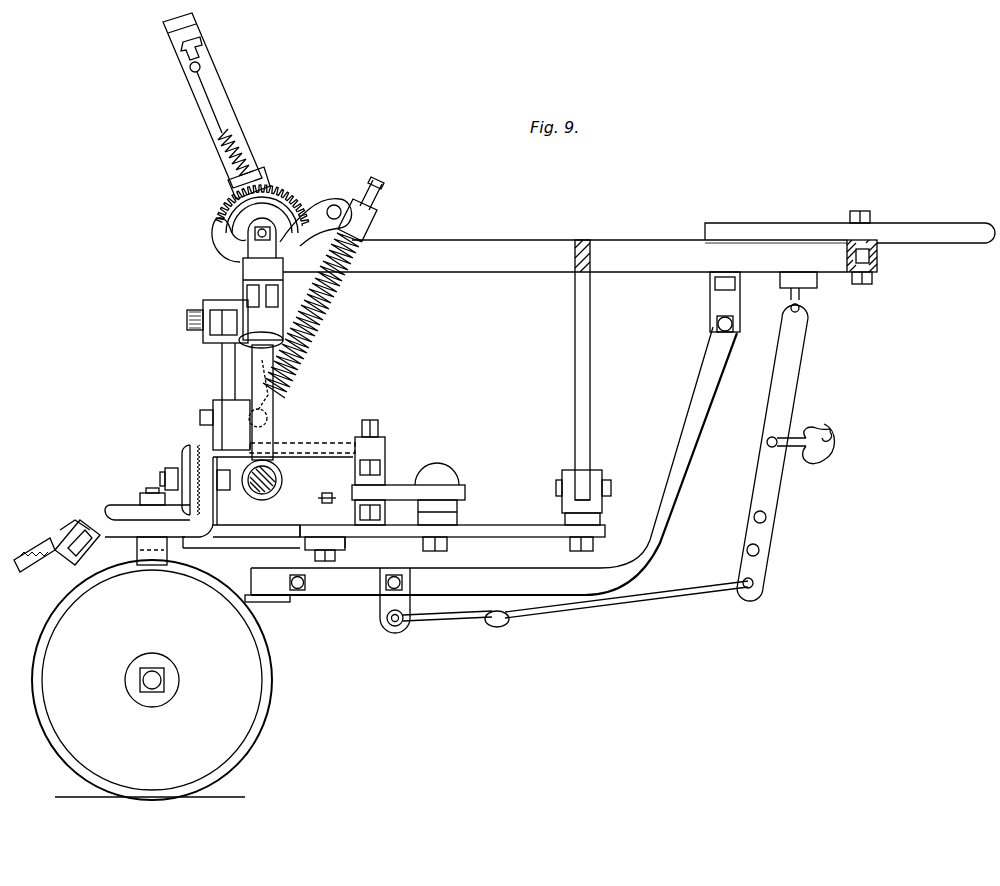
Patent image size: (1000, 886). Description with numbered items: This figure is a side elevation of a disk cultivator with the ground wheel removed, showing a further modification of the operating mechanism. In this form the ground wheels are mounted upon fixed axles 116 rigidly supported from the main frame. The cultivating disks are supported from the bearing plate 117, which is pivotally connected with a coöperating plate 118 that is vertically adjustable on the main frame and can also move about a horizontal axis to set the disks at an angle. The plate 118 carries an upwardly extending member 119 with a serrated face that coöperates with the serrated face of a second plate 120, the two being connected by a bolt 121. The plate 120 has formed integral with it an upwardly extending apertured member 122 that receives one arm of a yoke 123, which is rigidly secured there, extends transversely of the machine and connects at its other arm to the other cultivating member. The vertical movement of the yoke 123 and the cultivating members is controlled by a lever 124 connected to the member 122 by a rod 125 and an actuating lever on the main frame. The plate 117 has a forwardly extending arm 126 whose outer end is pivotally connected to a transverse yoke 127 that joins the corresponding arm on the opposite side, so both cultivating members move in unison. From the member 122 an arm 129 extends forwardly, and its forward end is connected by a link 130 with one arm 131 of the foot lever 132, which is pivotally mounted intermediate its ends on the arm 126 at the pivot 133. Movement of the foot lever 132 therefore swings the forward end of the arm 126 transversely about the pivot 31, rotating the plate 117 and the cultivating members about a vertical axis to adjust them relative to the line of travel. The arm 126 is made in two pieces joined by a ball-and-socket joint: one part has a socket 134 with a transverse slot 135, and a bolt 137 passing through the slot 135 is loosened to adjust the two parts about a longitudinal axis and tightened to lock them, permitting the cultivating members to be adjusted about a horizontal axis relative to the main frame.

The pivot 31 is at (145, 541).
The fixed axle 116 is at (284, 476).
The bearing plate 117 is at (115, 528).
The coöperating plate 118 is at (121, 518).
The upwardly extending member 119 is at (182, 453).
The second plate 120 is at (213, 510).
The bolt 121 is at (165, 475).
The apertured member 122 is at (213, 411).
The yoke 123 is at (222, 358).
The lever 124 is at (240, 137).
The rod 125 is at (380, 183).
The arm 126 is at (243, 543).
The yoke 127 is at (575, 326).
The arm 129 is at (322, 430).
The link 130 is at (385, 476).
The arm of foot lever 131 is at (400, 492).
The foot lever 132 is at (448, 470).
The pivot of foot lever 133 is at (456, 509).
The socket 134 is at (282, 525).
The transverse slot 135 is at (328, 505).
The bolt 137 is at (322, 498).